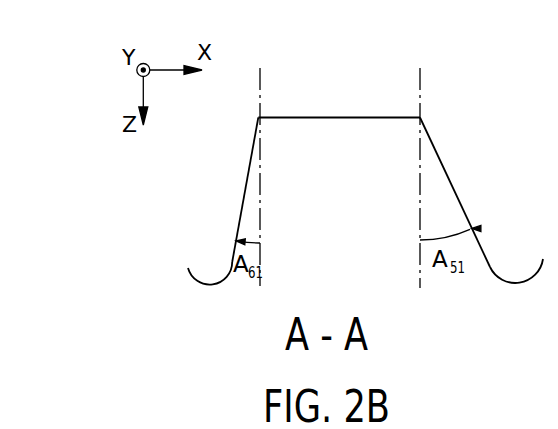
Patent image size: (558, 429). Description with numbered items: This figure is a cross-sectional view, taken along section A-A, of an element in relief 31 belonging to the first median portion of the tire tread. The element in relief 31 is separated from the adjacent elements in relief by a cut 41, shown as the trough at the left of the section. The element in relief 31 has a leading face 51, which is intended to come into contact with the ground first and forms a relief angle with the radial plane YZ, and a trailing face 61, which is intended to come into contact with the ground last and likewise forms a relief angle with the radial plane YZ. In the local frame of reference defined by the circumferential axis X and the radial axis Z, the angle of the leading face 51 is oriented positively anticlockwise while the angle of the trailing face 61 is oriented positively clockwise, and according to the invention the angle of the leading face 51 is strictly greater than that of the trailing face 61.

The element in relief 31 is at (336, 112).
The cut 41 is at (206, 276).
The leading face 51 is at (458, 176).
The trailing face 61 is at (240, 181).